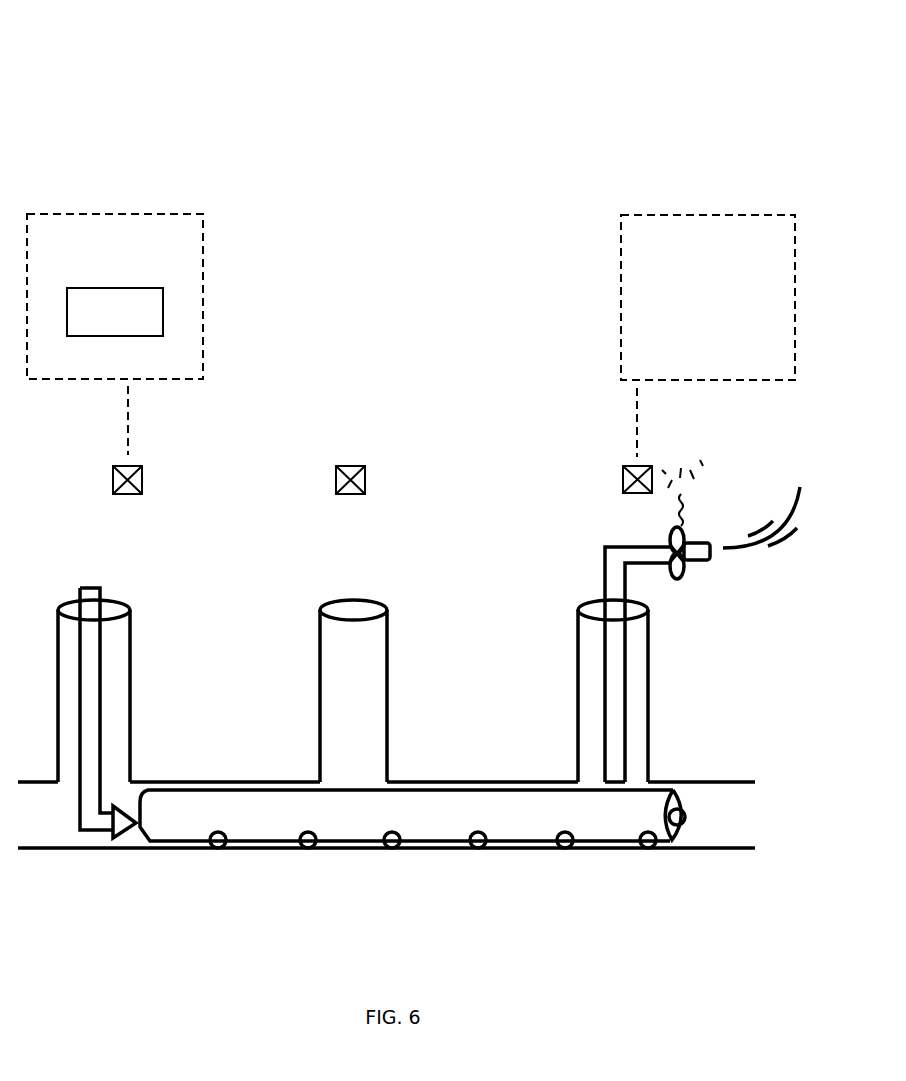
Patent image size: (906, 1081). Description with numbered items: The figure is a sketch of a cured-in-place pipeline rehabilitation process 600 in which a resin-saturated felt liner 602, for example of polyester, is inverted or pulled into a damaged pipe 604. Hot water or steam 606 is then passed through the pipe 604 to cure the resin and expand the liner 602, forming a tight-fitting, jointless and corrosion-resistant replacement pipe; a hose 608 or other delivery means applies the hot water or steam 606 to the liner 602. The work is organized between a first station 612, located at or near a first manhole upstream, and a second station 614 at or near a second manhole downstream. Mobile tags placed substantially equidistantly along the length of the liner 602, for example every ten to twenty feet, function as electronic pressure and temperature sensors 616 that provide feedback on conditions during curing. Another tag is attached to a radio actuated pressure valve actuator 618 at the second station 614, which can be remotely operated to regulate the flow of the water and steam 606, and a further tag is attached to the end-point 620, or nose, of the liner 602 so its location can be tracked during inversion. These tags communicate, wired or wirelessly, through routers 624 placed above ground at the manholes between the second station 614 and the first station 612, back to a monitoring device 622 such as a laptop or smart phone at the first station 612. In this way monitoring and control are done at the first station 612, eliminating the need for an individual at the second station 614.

The process 600 is at (140, 64).
The liner 602 is at (184, 789).
The pipe 604 is at (499, 781).
The hot water or steam 606 is at (783, 542).
The hose 608 is at (88, 588).
The first station 612 is at (99, 249).
The second station 614 is at (694, 250).
The pressure and temperature sensors 616 is at (417, 863).
The pressure valve actuator 618 is at (684, 563).
The end-point of the liner 620 is at (684, 822).
The monitoring device 622 is at (163, 315).
The routers 624 is at (382, 480).